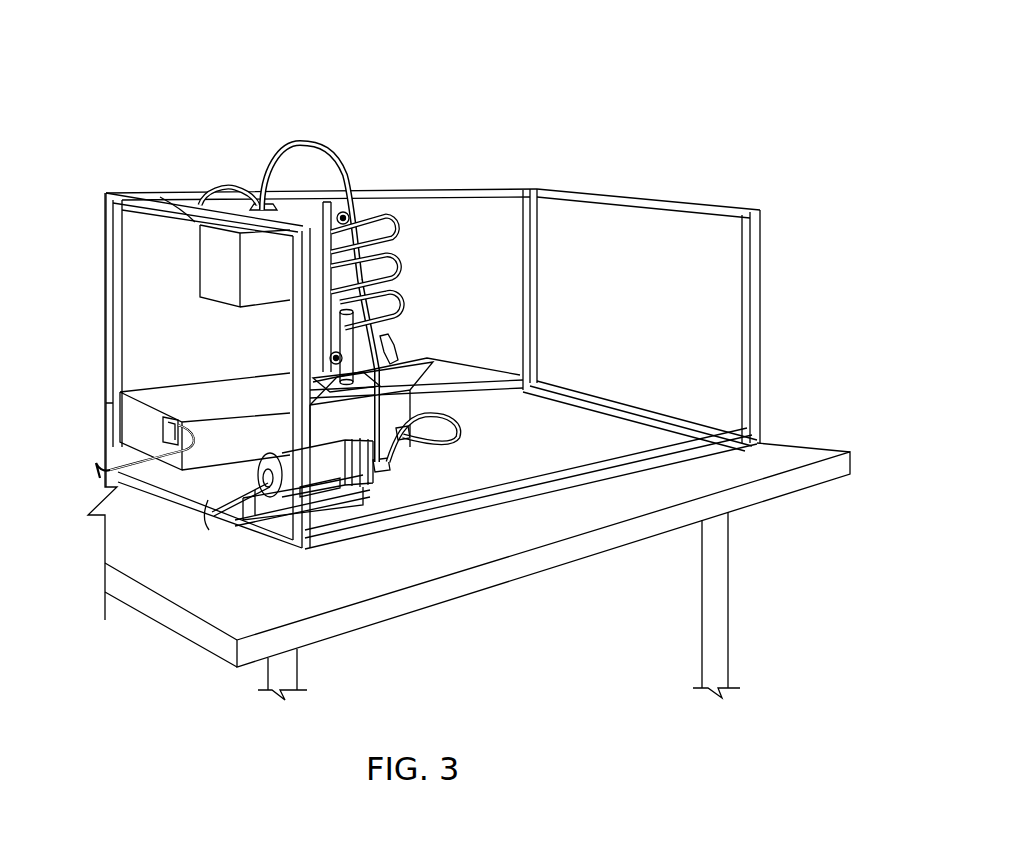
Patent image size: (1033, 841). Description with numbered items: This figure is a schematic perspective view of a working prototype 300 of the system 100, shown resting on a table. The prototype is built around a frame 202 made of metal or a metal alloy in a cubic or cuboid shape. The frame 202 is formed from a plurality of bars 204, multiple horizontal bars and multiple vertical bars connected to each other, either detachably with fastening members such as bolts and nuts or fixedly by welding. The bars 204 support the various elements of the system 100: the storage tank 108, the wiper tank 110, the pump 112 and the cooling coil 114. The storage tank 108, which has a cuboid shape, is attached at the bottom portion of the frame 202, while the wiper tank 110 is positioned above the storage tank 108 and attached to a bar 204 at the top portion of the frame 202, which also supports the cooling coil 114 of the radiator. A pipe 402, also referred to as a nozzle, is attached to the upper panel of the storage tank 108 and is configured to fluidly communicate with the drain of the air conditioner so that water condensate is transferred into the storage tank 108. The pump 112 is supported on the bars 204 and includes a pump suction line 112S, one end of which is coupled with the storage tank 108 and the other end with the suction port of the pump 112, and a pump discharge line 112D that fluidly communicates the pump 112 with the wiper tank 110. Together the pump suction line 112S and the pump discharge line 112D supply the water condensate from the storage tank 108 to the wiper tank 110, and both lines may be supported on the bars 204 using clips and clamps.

The system 100 is at (647, 56).
The working prototype 300 is at (608, 123).
The frame 202 is at (140, 168).
The bars 204 is at (492, 187).
The wiper tank 110 is at (198, 257).
The storage tank 108 is at (160, 375).
The pump 112 is at (205, 458).
The cooling coil 114 is at (365, 215).
The pipe 402 is at (382, 337).
The pump discharge line 112D is at (387, 382).
The pump suction line 112S is at (466, 428).